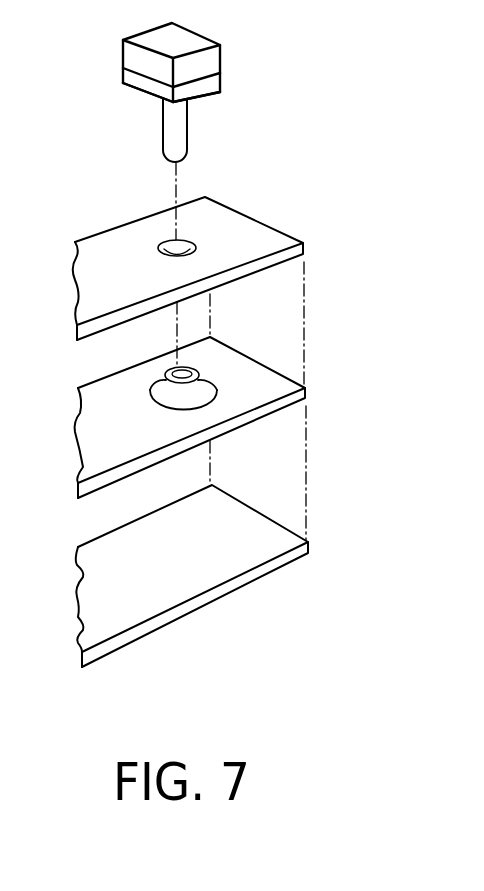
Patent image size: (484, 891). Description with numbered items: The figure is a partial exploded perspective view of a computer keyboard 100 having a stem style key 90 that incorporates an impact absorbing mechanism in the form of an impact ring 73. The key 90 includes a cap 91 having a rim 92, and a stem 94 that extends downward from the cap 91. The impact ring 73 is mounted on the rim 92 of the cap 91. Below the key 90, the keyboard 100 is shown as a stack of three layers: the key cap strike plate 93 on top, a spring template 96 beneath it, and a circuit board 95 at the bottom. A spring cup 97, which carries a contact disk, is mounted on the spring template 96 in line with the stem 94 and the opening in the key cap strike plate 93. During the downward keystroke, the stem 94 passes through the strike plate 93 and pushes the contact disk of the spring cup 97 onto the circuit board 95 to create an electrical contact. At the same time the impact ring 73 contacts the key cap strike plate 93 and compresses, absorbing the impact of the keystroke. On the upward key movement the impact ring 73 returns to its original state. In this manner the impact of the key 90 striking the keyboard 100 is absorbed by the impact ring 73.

The key 90 is at (179, 121).
The cap 91 is at (114, 58).
The rim 92 is at (218, 78).
The impact ring 73 is at (198, 88).
The stem 94 is at (178, 139).
The key cap strike plate 93 is at (260, 224).
The spring template 96 is at (160, 403).
The spring cup 97 is at (172, 397).
The circuit board 95 is at (247, 505).
The keyboard 100 is at (169, 426).